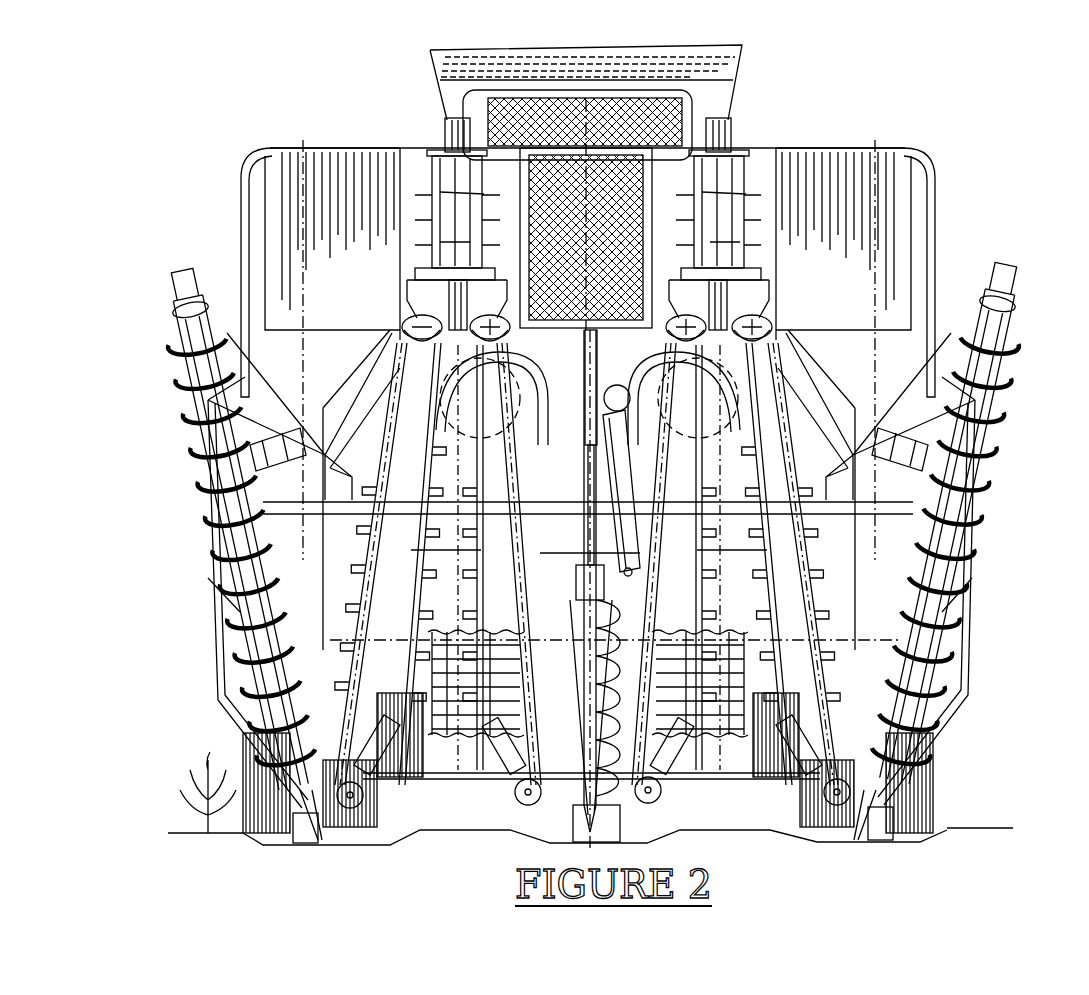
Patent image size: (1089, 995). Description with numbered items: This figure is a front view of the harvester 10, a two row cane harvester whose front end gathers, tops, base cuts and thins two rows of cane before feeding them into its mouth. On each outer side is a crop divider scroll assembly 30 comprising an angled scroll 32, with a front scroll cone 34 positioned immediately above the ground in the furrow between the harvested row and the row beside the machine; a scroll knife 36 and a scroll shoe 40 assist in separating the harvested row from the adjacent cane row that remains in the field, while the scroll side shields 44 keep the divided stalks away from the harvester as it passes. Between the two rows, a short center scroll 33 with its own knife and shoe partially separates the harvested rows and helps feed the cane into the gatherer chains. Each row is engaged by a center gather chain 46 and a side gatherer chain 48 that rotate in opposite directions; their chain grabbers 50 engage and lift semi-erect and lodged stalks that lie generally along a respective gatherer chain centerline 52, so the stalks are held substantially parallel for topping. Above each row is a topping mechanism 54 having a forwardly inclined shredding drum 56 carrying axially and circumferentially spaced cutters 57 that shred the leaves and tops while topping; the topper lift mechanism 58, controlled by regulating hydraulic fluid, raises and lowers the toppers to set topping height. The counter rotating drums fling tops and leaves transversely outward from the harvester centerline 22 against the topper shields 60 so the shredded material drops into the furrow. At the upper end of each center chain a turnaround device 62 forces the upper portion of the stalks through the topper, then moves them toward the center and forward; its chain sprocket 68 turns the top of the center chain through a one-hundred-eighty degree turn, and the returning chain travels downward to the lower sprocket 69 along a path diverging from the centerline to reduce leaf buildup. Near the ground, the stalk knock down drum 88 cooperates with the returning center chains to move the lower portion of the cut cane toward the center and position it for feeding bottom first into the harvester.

The harvester 10 is at (918, 121).
The harvester centerline 22 is at (593, 130).
The crop divider scroll assembly 30 is at (188, 446).
The scroll 32 is at (183, 335).
The short center scroll 33 is at (576, 790).
The front scroll cone 34 is at (292, 818).
The scroll knife 36 is at (305, 830).
The scroll shoe 40 is at (318, 828).
The scroll side shield 44 is at (205, 622).
The center gather chain 46 is at (530, 505).
The side gatherer chain 48 is at (360, 527).
The chain grabber 50 is at (428, 572).
The gatherer chain centerline 52 is at (445, 606).
The topping mechanism 54 is at (445, 136).
The shredding drum 56 is at (745, 237).
The cutter 57 is at (413, 198).
The topper lift mechanism 58 is at (608, 476).
The topper shield 60 is at (241, 250).
The turnaround device 62 is at (530, 350).
The chain sprocket 68 is at (415, 322).
The lower sprocket 69 is at (682, 796).
The stalk knock down drum 88 is at (458, 700).